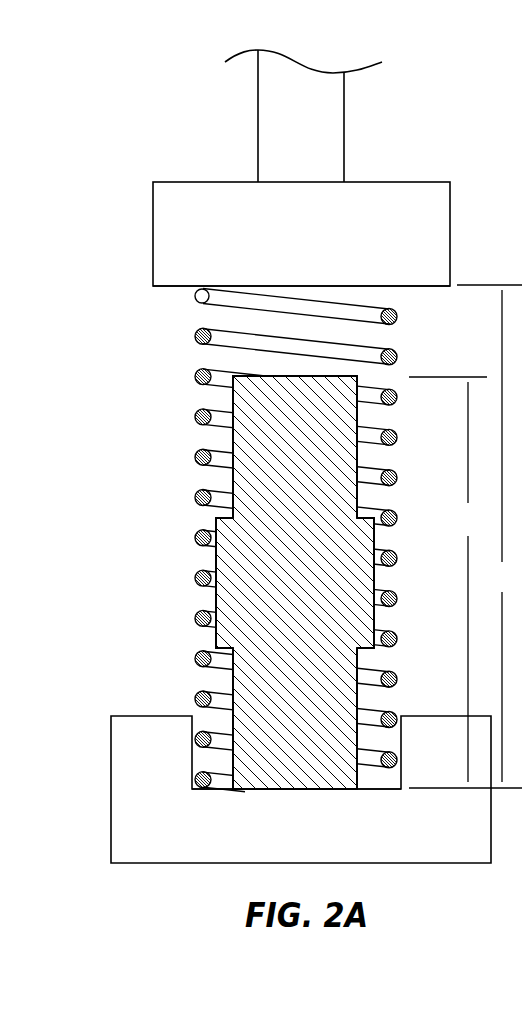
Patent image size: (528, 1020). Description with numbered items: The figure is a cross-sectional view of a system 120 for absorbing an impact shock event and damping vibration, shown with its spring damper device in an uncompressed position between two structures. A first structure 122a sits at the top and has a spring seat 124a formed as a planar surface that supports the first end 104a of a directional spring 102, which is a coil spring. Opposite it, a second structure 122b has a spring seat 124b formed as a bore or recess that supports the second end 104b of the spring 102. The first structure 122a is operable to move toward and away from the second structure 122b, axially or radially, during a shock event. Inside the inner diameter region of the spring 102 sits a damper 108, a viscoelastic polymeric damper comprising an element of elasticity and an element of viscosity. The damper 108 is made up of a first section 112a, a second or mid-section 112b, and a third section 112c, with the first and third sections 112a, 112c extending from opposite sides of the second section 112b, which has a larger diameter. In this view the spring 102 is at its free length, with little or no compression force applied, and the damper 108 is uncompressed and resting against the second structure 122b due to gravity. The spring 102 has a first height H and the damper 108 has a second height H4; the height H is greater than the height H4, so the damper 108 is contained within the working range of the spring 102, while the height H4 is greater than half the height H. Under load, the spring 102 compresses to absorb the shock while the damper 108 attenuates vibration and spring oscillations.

The system 120 is at (174, 95).
The first structure 122a is at (168, 212).
The spring seat 124a is at (171, 287).
The first end 104a is at (194, 301).
The directional spring 102 is at (392, 349).
The damper 108 is at (333, 428).
The first section 112a is at (247, 403).
The second section 112b is at (250, 547).
The third section 112c is at (257, 673).
The second structure 122b is at (125, 828).
The second end 104b is at (206, 788).
The spring seat 124b is at (376, 790).
The second height H4 is at (465, 582).
The first height H is at (489, 533).